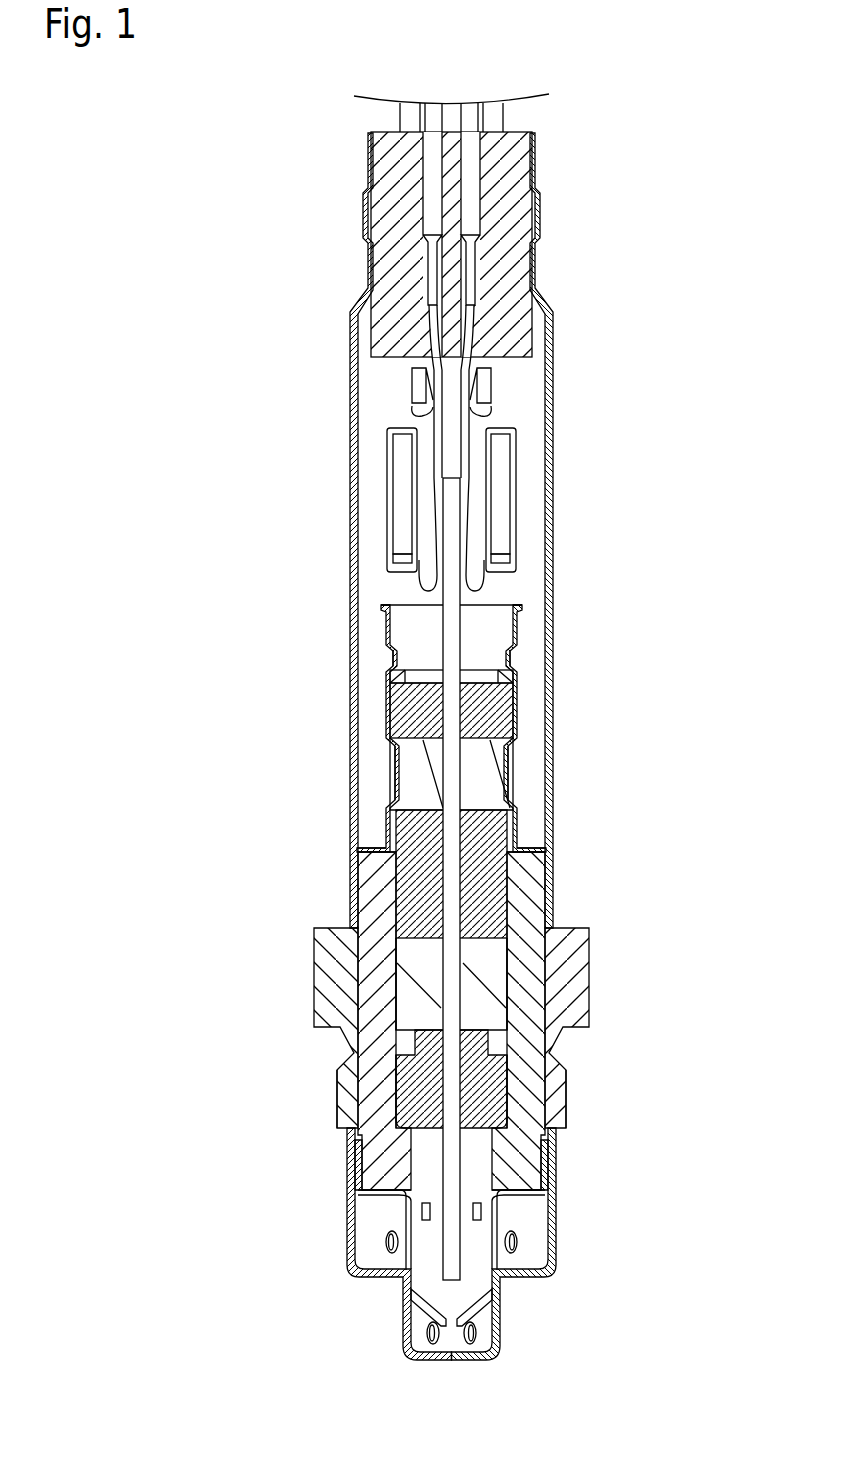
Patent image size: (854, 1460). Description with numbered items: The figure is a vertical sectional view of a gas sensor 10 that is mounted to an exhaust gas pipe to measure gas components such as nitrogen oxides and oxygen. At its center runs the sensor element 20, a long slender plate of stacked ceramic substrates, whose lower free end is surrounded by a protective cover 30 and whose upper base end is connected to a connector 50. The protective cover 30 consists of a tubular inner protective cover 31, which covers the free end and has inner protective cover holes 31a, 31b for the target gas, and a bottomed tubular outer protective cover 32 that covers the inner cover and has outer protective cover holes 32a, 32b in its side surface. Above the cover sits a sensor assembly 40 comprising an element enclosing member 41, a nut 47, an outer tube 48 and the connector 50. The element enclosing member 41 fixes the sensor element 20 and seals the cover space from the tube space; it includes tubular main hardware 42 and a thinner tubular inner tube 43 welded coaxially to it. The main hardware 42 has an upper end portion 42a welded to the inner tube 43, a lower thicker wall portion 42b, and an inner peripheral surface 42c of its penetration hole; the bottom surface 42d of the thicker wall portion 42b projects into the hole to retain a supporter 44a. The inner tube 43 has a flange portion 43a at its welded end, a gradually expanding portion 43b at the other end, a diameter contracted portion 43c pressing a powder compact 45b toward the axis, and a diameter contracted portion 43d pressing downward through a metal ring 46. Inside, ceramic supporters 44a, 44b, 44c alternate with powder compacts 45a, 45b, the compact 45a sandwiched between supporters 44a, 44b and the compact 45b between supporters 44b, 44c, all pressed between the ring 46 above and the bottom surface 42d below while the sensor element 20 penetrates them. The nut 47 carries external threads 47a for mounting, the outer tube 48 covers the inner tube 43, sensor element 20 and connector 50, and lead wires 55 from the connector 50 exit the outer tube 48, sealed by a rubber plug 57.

The gas sensor 10 is at (475, 738).
The sensor element 20 is at (452, 985).
The protective cover 30 is at (480, 1255).
The inner protective cover 31 is at (503, 1261).
The inner protective cover hole 31a is at (480, 1207).
The inner protective cover hole 31b is at (440, 1352).
The outer protective cover 32 is at (397, 1244).
The outer protective cover hole 32a is at (385, 1243).
The outer protective cover hole 32b is at (427, 1338).
The sensor assembly 40 is at (442, 642).
The element enclosing member 41 is at (528, 626).
The main hardware 42 is at (381, 1021).
The end portion 42a is at (377, 866).
The thicker wall portion 42b is at (388, 1170).
The inner peripheral surface 42c is at (393, 964).
The bottom surface 42d is at (395, 1085).
The inner tube 43 is at (447, 728).
The flange portion 43a is at (380, 845).
The gradually expanding portion 43b is at (385, 608).
The diameter contracted portion 43c is at (398, 765).
The diameter contracted portion 43d is at (397, 655).
The supporter 44a is at (490, 1087).
The supporter 44b is at (493, 862).
The supporter 44c is at (502, 701).
The powder compact 45a is at (498, 947).
The powder compact 45b is at (493, 763).
The metal ring 46 is at (507, 672).
The nut 47 is at (436, 1028).
The external threads 47a is at (337, 1093).
The outer tube 48 is at (551, 385).
The connector 50 is at (517, 490).
The lead wires 55 is at (433, 180).
The rubber plug 57 is at (505, 324).